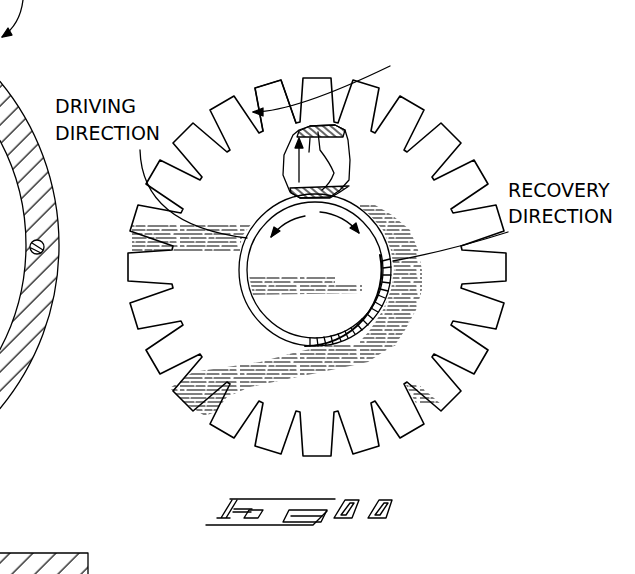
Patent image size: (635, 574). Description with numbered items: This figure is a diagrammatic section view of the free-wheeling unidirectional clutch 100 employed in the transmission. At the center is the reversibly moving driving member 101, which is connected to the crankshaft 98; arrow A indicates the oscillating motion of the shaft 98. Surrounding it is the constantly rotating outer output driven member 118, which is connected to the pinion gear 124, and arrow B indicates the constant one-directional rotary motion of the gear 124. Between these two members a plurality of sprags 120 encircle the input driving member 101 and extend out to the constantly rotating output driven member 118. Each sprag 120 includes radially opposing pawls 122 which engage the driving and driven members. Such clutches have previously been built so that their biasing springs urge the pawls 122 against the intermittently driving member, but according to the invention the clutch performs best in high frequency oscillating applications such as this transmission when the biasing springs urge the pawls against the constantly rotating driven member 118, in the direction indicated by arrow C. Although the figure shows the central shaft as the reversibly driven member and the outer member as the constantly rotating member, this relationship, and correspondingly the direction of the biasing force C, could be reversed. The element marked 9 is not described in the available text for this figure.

The free-wheeling unidirectional clutch 100 is at (339, 238).
The pinion gear 124 is at (464, 180).
The output driven member 118 is at (275, 105).
The sprag 120 is at (322, 121).
The driving member 101 is at (336, 263).
The crankshaft 98 is at (390, 270).
The pawls 122 is at (239, 199).
The arrow A is at (324, 217).
The arrow B is at (317, 128).
The arrow C is at (291, 167).
The housing 9 is at (0, 452).